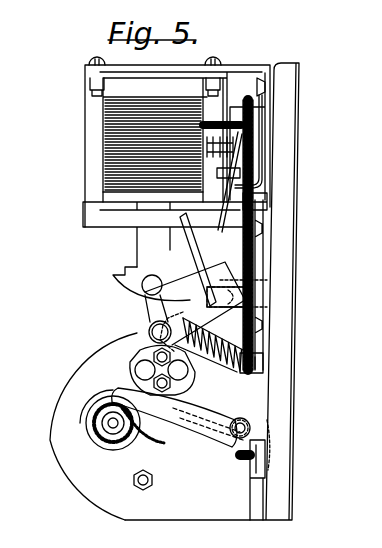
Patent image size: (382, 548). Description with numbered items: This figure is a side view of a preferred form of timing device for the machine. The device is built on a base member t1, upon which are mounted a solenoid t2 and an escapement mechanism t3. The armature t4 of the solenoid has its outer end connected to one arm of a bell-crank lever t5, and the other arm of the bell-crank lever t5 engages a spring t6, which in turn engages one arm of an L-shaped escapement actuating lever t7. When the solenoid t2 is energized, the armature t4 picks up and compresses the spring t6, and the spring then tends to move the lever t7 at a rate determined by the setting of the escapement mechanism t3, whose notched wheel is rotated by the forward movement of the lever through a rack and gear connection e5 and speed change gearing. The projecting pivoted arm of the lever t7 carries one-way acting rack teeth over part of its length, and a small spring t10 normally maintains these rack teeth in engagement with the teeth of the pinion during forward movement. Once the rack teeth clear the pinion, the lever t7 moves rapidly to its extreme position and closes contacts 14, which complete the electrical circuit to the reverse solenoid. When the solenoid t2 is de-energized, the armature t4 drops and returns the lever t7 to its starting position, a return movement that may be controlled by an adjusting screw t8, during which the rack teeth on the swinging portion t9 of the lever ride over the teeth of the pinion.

The base member t1 is at (289, 499).
The solenoid t2 is at (96, 127).
The contacts 14 is at (215, 222).
The armature t4 is at (137, 250).
The bell-crank lever t5 is at (173, 303).
The escapement mechanism t3 is at (63, 386).
The spring t6 is at (214, 362).
The L-shaped escapement actuating lever t7 is at (229, 370).
The small spring t10 is at (172, 408).
The swinging portion t9 is at (193, 438).
The rack and gear connection e5 is at (127, 437).
The adjusting screw t8 is at (251, 466).